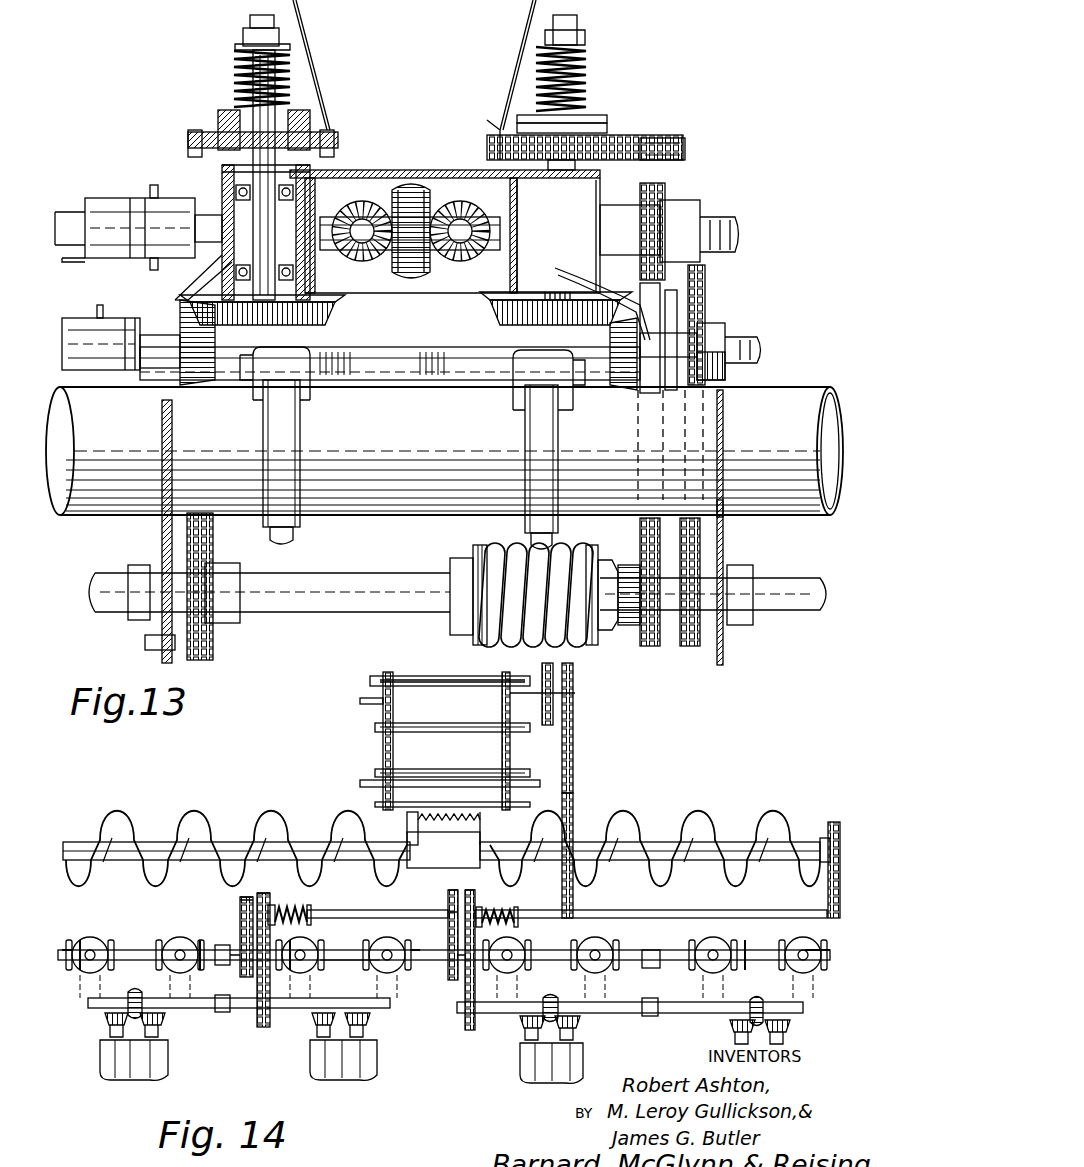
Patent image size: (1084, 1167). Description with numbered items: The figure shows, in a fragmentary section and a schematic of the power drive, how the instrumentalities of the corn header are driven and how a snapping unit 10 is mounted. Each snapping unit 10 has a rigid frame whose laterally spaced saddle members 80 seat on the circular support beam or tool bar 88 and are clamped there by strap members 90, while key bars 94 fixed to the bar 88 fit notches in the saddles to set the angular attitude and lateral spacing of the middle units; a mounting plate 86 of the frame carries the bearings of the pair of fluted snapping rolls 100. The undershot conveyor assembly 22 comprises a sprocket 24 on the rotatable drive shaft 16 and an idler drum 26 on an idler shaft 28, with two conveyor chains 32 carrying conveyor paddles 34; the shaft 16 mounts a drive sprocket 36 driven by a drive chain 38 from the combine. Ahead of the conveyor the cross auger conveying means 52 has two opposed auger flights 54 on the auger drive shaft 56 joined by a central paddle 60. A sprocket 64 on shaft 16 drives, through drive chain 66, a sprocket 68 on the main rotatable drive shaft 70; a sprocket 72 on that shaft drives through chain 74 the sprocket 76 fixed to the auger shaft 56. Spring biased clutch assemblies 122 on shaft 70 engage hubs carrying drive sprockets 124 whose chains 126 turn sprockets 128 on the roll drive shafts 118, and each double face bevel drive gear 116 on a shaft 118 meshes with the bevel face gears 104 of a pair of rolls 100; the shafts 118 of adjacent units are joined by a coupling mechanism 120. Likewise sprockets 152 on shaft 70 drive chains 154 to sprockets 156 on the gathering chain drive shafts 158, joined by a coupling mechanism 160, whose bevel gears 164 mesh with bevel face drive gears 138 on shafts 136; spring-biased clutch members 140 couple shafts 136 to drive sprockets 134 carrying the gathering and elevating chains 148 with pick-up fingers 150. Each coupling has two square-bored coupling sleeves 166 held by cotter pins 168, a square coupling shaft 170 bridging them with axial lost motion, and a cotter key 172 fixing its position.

In FIG. 14, the snapping unit 10 is at (97, 1088).
In FIG. 14, the rotatable drive shaft 16 is at (368, 703).
In FIG. 14, the undershot conveyor assembly 22 is at (368, 747).
In FIG. 14, the sprocket 24 is at (408, 682).
In FIG. 14, the drum 26 is at (430, 790).
In FIG. 14, the idler shaft 28 is at (360, 783).
In FIG. 14, the conveyor chains 32 is at (383, 715).
In FIG. 14, the conveyor paddles 34 is at (455, 725).
In FIG. 14, the drive sprocket 36 is at (548, 727).
In FIG. 14, the drive chain 38 is at (543, 672).
In FIG. 14, the cross auger conveying means 52 is at (441, 823).
In FIG. 14, the auger flights 54 is at (340, 828).
In FIG. 14, the auger drive shaft 56 is at (155, 848).
In FIG. 14, the paddle 60 is at (440, 860).
In FIG. 14, the sprocket 64 is at (575, 700).
In FIG. 13, the drive chain 66 is at (212, 660).
In FIG. 14, the drive chain 66 is at (573, 778).
In FIG. 14, the sprocket 68 is at (575, 905).
In FIG. 13, the main rotatable drive shaft 70 is at (348, 605).
In FIG. 14, the sprocket 72 is at (820, 915).
In FIG. 14, the drive chain 74 is at (822, 845).
In FIG. 14, the sprocket 76 is at (832, 822).
In FIG. 13, the saddle members 80 is at (258, 400).
In FIG. 13, the mounting plate 86 is at (365, 172).
In FIG. 13, the support beam or tool bar 88 is at (400, 500).
In FIG. 13, the auxiliary bracket or strap members 90 is at (300, 440).
In FIG. 13, the key bars 94 is at (392, 382).
In FIG. 14, the snapping rolls 100 is at (130, 1075).
In FIG. 13, the bevel face gear 104 is at (435, 215).
In FIG. 14, the bevel face gear 104 is at (110, 1025).
In FIG. 13, the double face bevel drive gear 116 is at (412, 280).
In FIG. 14, the double face bevel drive gear 116 is at (135, 988).
In FIG. 13, the roll drive shafts 118 is at (210, 225).
In FIG. 14, the roll drive shafts 118 is at (188, 1010).
In FIG. 13, the coupling mechanism 120 is at (115, 198).
In FIG. 14, the coupling mechanism 120 is at (226, 1020).
In FIG. 13, the spring biased clutch assemblies 122 is at (570, 552).
In FIG. 14, the spring biased clutch assemblies 122 is at (300, 908).
In FIG. 13, the drive sprockets 124 is at (652, 648).
In FIG. 14, the drive sprockets 124 is at (252, 897).
In FIG. 13, the chains 126 is at (705, 290).
In FIG. 14, the chains 126 is at (285, 895).
In FIG. 13, the sprockets 128 is at (655, 215).
In FIG. 14, the sprockets 128 is at (262, 1027).
In FIG. 13, the drive sprockets 134 is at (215, 140).
In FIG. 14, the drive sprockets 134 is at (90, 950).
In FIG. 13, the rotatable shafts 136 is at (262, 85).
In FIG. 14, the rotatable shafts 136 is at (597, 955).
In FIG. 13, the bevel face drive gears 138 is at (325, 300).
In FIG. 13, the spring-biased clutch member 140 is at (290, 85).
In FIG. 13, the gathering and elevating chain 148 is at (335, 140).
In FIG. 14, the gathering and elevating chain 148 is at (68, 985).
In FIG. 13, the pick-up fingers 150 is at (685, 145).
In FIG. 13, the sprockets 152 is at (692, 648).
In FIG. 14, the sprockets 152 is at (240, 900).
In FIG. 13, the chains 154 is at (724, 530).
In FIG. 14, the chains 154 is at (240, 912).
In FIG. 13, the sprockets 156 is at (700, 335).
In FIG. 14, the sprockets 156 is at (238, 950).
In FIG. 13, the gathering chain drive shafts 158 is at (358, 345).
In FIG. 14, the gathering chain drive shafts 158 is at (338, 998).
In FIG. 13, the coupling mechanism 160 is at (78, 310).
In FIG. 14, the coupling mechanism 160 is at (222, 966).
In FIG. 13, the bevel gears 164 is at (205, 385).
In FIG. 14, the bevel gears 164 is at (72, 945).
In FIG. 13, the coupling sleeves 166 is at (130, 200).
In FIG. 13, the cotter pins 168 is at (155, 195).
In FIG. 13, the coupling shaft 170 is at (65, 245).
In FIG. 13, the cotter key 172 is at (80, 215).